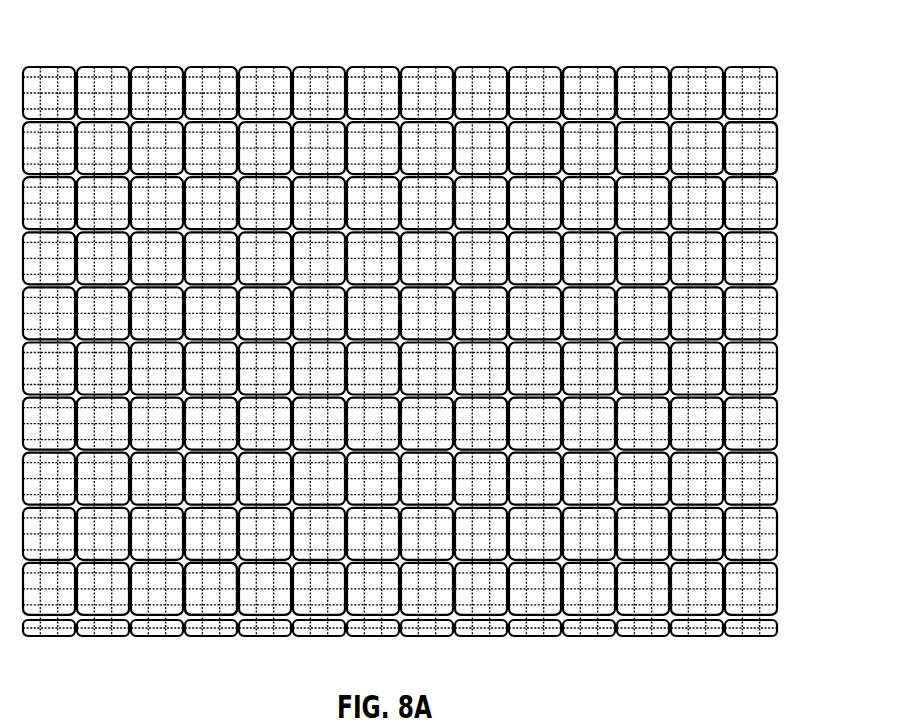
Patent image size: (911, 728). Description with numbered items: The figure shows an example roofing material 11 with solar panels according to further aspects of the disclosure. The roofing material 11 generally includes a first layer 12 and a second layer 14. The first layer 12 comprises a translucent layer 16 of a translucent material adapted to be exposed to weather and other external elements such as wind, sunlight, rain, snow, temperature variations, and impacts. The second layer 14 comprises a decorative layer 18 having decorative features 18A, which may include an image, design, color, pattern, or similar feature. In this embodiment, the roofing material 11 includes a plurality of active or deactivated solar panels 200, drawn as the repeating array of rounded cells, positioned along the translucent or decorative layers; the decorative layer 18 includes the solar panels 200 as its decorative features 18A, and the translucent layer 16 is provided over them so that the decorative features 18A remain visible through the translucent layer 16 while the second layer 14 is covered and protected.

The roofing material 11 is at (425, 356).
The first layer 12 is at (206, 598).
The second layer 14 is at (400, 666).
The translucent layer 16 is at (498, 625).
The decorative layer 18 is at (762, 142).
The decorative features 18A is at (573, 90).
The solar panels 200 is at (293, 68).